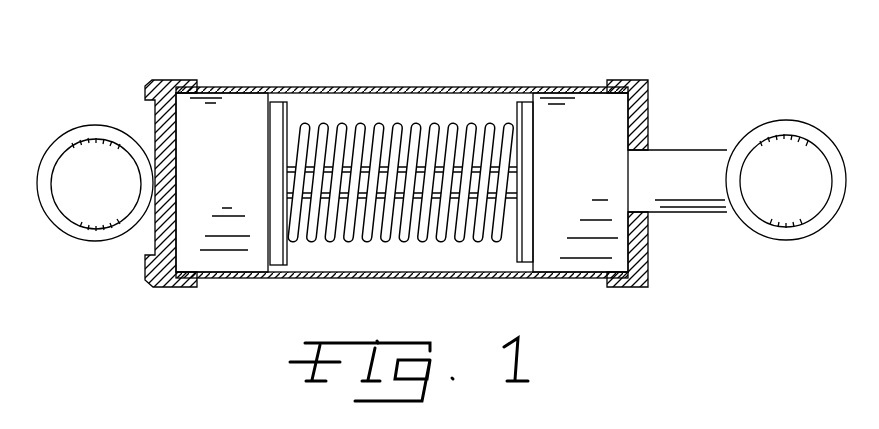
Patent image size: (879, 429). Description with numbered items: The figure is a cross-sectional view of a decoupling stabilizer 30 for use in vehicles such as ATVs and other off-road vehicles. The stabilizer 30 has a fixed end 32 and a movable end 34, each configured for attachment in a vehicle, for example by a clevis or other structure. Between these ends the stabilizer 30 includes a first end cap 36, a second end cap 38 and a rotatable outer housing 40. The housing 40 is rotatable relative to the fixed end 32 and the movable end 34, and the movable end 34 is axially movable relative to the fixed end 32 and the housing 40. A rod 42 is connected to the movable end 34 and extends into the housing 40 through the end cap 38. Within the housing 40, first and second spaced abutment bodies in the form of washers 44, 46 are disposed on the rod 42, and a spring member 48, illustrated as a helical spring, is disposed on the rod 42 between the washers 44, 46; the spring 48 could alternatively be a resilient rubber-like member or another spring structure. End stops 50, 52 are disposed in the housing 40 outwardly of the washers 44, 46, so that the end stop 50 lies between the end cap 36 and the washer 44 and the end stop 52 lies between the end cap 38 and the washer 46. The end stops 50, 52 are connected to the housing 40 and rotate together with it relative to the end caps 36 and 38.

The decoupling stabilizer 30 is at (122, 72).
The fixed end 32 is at (100, 238).
The movable end 34 is at (785, 238).
The first end cap 36 is at (160, 232).
The second end cap 38 is at (651, 254).
The rotatable outer housing 40 is at (400, 277).
The rod 42 is at (380, 130).
The first washer 44 is at (280, 264).
The second washer 46 is at (525, 258).
The spring member 48 is at (455, 242).
The first end stop 50 is at (226, 255).
The second end stop 52 is at (580, 245).